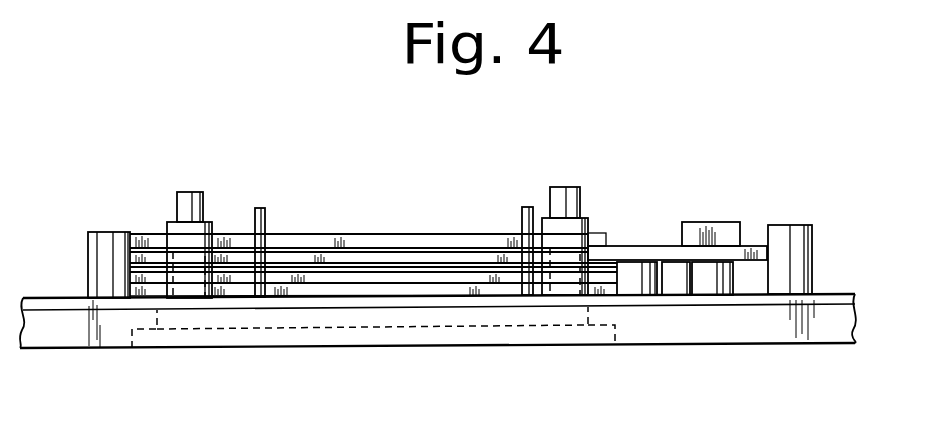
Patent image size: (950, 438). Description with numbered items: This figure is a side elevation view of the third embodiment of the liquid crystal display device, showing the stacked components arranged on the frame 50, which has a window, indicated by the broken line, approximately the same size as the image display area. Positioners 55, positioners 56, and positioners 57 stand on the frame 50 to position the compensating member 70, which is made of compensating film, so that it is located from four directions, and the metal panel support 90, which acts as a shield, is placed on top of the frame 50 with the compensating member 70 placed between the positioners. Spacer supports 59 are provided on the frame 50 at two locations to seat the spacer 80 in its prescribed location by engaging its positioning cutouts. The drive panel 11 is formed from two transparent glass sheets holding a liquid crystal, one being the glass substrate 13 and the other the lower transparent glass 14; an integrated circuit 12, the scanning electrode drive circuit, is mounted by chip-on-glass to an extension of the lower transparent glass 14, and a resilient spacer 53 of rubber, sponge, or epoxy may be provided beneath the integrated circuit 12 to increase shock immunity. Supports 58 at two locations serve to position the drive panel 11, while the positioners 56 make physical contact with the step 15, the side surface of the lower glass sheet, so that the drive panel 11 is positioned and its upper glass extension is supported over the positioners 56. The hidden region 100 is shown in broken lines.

The drive panel 11 is at (407, 247).
The integrated circuit 12 is at (730, 228).
The glass substrate 13 is at (350, 246).
The lower transparent glass 14 is at (668, 250).
The step 15 is at (465, 257).
The frame 50 is at (70, 338).
The spacer 53 is at (715, 283).
The positioner 55 is at (112, 244).
The positioner 56 is at (188, 300).
The positioner 57 is at (198, 232).
The support 58 is at (800, 273).
The spacer support 59 is at (263, 210).
The compensating member 70 is at (450, 288).
The spacer 80 is at (378, 268).
The panel support 90 is at (297, 303).
The hidden recess 100 is at (552, 338).